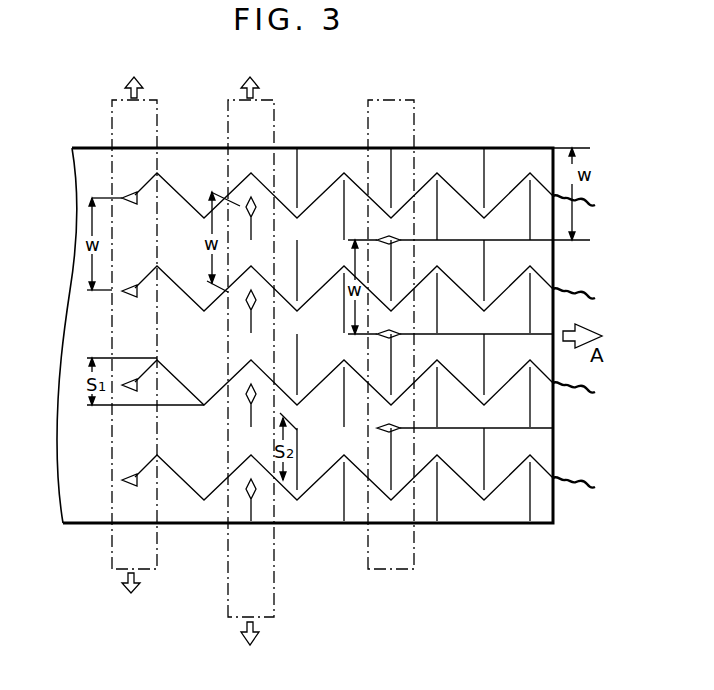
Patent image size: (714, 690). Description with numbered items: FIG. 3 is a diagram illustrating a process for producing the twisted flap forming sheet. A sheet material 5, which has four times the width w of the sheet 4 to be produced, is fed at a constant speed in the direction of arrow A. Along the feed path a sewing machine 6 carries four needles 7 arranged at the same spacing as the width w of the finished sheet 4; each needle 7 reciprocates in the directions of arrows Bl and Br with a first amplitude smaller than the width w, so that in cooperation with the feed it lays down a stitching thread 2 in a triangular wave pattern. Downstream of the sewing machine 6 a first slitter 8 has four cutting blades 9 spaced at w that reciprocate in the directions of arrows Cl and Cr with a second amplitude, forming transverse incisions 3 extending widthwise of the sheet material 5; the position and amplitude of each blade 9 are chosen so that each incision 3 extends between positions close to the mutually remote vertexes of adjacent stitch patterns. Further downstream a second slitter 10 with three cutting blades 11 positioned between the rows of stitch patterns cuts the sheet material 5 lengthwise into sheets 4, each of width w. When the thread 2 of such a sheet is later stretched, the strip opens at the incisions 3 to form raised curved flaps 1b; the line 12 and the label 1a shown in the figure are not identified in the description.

The first conductor group 1a is at (443, 12).
The raised curved flaps 1b is at (397, 12).
The stitching thread 2 is at (572, 478).
The incisions 3 is at (297, 441).
The sheet 4 is at (553, 517).
The sheet material 5 is at (63, 323).
The sewing machine 6 is at (112, 553).
The needles 7 is at (122, 481).
The first slitter 8 is at (228, 597).
The cutting blades 9 is at (245, 498).
The second slitter 10 is at (395, 572).
The cutting blades 11 is at (377, 429).
The horizontal conductor line 12 is at (538, 430).